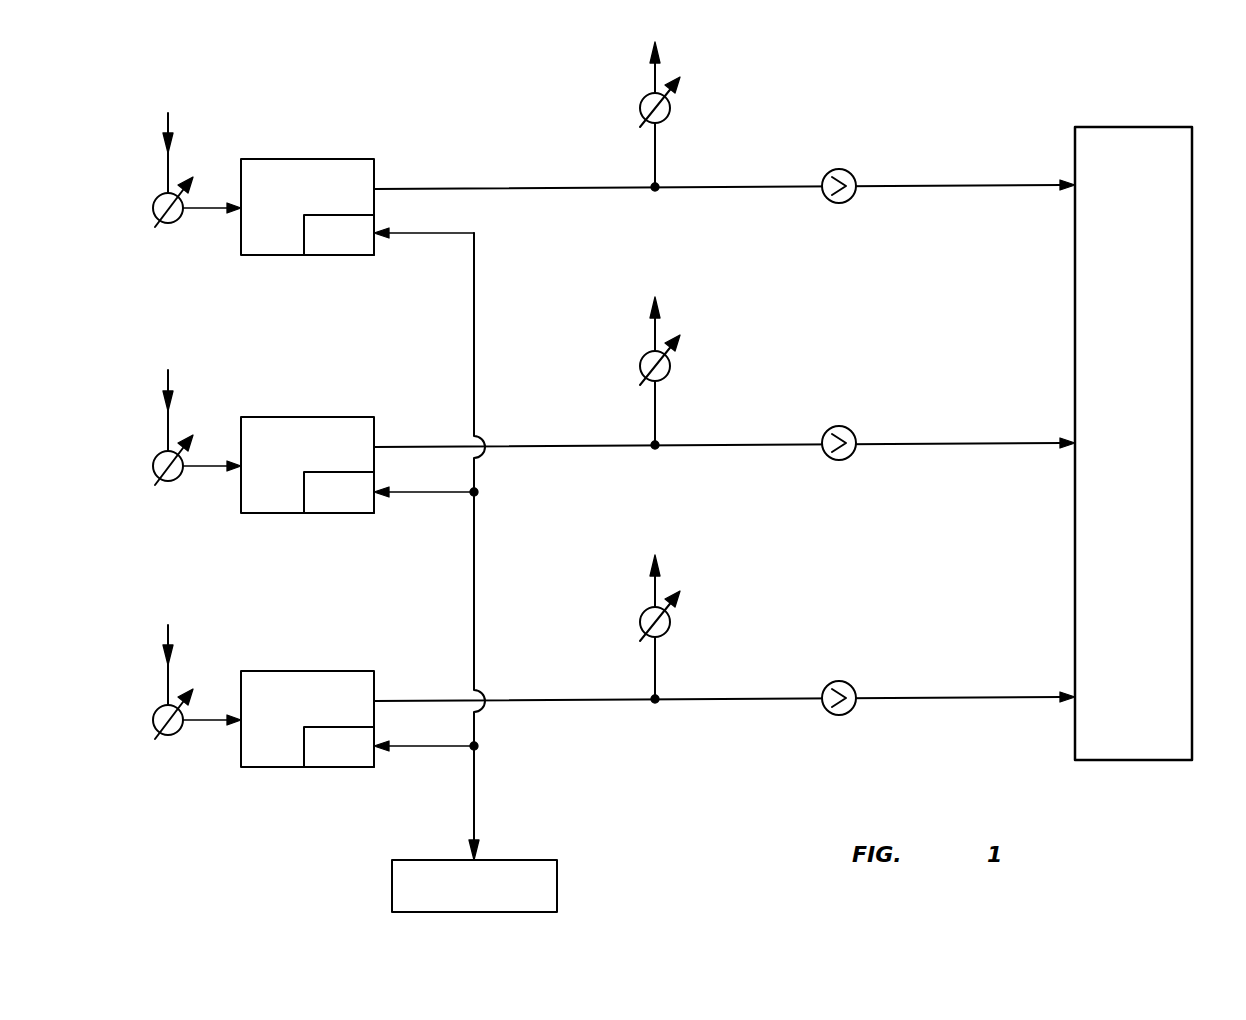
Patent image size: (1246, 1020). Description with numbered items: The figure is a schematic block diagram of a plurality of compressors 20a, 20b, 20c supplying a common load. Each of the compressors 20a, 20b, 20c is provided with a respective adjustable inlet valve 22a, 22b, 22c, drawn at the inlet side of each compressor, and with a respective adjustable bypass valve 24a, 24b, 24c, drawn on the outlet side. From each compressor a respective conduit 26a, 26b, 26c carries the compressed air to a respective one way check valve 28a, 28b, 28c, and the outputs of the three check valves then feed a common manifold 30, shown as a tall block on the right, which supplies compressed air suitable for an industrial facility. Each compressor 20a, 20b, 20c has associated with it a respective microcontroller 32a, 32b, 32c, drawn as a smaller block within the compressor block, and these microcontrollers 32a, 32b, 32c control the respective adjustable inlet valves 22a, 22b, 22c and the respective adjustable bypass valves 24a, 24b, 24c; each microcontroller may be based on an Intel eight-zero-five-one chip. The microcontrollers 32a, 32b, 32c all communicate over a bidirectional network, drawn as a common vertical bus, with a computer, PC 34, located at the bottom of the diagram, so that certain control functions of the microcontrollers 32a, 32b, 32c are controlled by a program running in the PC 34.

The compressor 20a is at (291, 159).
The compressor 20b is at (291, 417).
The compressor 20c is at (291, 671).
The adjustable inlet valve 22a is at (170, 223).
The adjustable inlet valve 22b is at (170, 481).
The adjustable inlet valve 22c is at (170, 735).
The adjustable bypass valve 24a is at (648, 96).
The adjustable bypass valve 24b is at (648, 353).
The adjustable bypass valve 24c is at (648, 610).
The conduit 26a is at (706, 185).
The conduit 26b is at (706, 443).
The conduit 26c is at (706, 697).
The one way check valve 28a is at (849, 199).
The one way check valve 28b is at (849, 457).
The one way check valve 28c is at (849, 712).
The manifold 30 is at (1142, 127).
The microcontroller 32a is at (339, 235).
The microcontroller 32b is at (339, 492).
The microcontroller 32c is at (339, 747).
The PC 34 is at (522, 860).